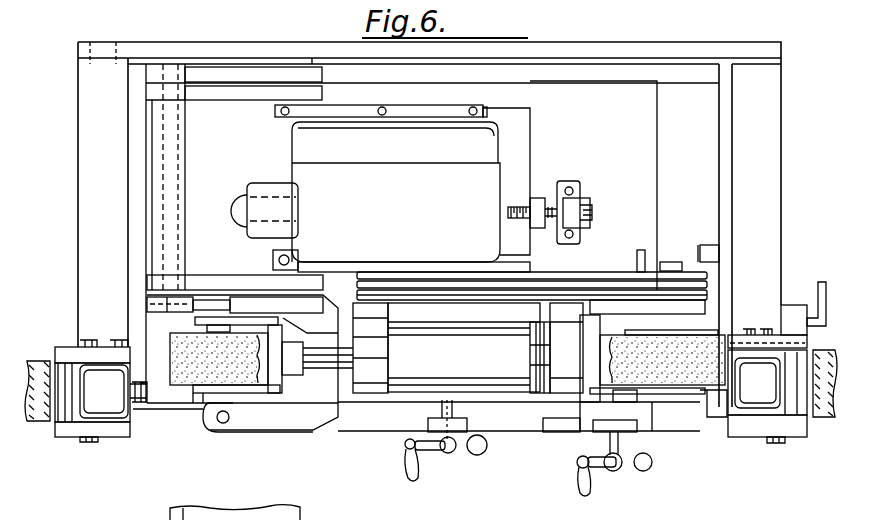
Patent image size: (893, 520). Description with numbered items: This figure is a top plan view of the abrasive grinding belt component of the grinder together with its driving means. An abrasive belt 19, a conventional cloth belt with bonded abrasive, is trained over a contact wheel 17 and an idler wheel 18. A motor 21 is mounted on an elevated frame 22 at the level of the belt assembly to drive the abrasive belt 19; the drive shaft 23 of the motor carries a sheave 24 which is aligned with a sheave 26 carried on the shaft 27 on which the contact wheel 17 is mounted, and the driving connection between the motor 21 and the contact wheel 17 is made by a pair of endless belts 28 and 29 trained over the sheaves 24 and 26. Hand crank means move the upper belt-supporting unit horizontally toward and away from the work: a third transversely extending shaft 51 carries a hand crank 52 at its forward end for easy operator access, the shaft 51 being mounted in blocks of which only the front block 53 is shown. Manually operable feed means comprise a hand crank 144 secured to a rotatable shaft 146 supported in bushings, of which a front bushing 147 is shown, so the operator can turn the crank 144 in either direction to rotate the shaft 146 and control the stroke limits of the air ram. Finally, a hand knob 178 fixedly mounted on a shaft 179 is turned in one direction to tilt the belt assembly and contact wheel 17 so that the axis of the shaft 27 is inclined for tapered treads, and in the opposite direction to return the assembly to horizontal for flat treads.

The contact wheel 17 is at (713, 390).
The idler wheel 18 is at (195, 388).
The abrasive belt 19 is at (185, 373).
The motor 21 is at (483, 172).
The elevated frame 22 is at (629, 161).
The drive shaft 23 is at (400, 275).
The sheave 24 is at (417, 302).
The sheave 26 is at (650, 262).
The shaft 27 is at (668, 262).
The endless belt 28 is at (590, 288).
The endless belt 29 is at (613, 277).
The third transversely extending shaft 51 is at (457, 412).
The hand crank 52 is at (408, 468).
The front block 53 is at (430, 423).
The hand crank 144 is at (598, 470).
The rotatable shaft 146 is at (601, 434).
The front bushing 147 is at (597, 430).
The hand knob 178 is at (459, 356).
The shaft 179 is at (538, 381).